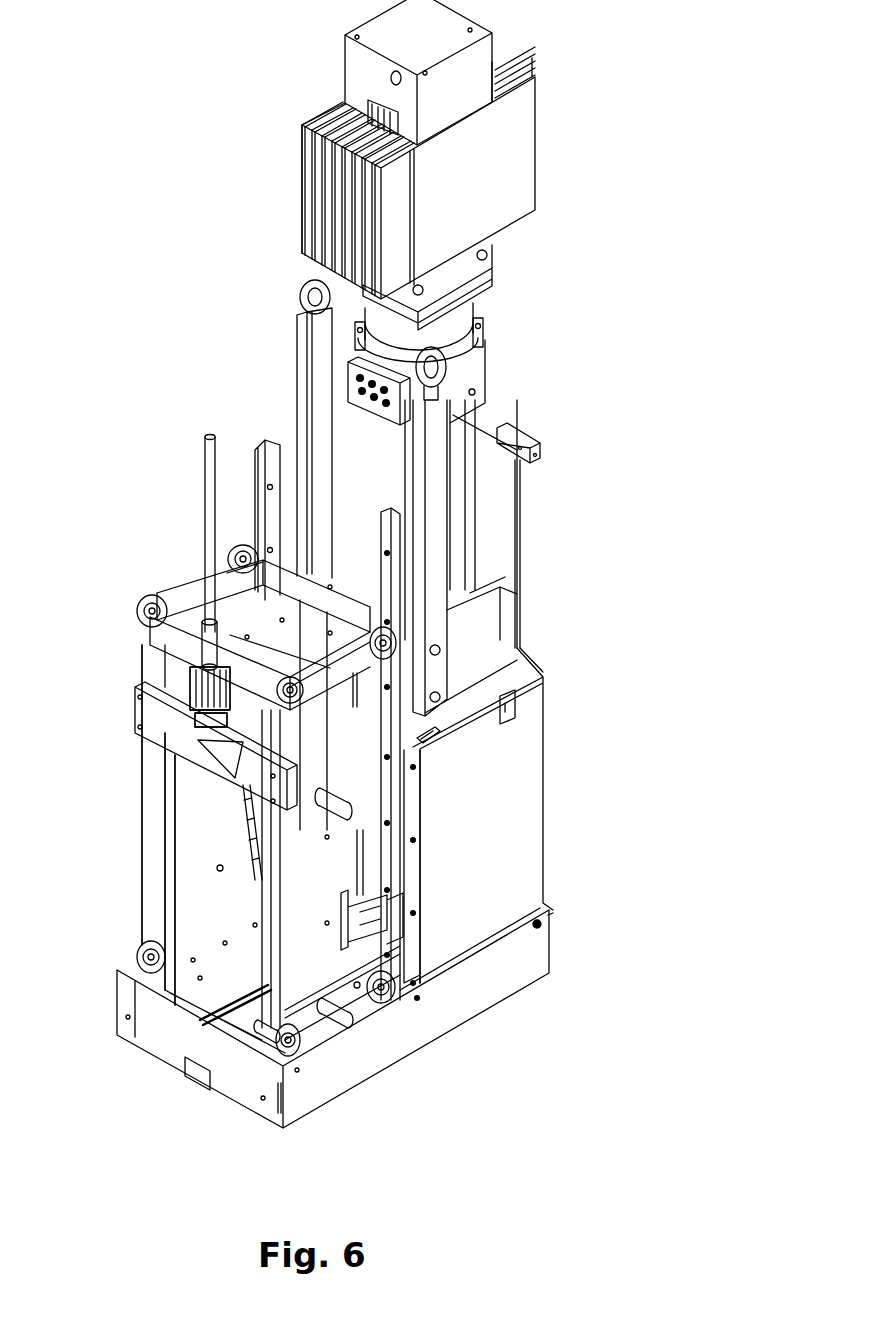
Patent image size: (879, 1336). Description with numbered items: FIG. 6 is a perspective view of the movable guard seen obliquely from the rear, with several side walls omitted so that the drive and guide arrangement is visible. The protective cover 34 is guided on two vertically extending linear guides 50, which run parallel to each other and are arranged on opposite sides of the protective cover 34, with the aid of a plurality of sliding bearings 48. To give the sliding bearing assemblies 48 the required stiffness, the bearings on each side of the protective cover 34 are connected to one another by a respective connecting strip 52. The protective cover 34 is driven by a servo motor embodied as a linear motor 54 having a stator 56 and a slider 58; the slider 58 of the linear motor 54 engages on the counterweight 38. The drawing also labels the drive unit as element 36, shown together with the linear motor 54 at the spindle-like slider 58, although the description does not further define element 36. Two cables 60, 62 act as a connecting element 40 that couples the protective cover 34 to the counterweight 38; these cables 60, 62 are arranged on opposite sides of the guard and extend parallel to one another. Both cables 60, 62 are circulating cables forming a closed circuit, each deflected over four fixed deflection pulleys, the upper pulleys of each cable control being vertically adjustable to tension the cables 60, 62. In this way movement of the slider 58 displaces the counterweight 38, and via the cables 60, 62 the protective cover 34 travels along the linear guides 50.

The protective cover 34 is at (528, 803).
The spindle nut 36 is at (215, 660).
The counterweight 38 is at (153, 727).
The connecting element 40 is at (140, 907).
The sliding bearing 48 is at (432, 741).
The linear guide 50 is at (268, 442).
The connecting strip 52 is at (412, 868).
The linear motor 54 is at (210, 697).
The stator 56 is at (205, 650).
The slider 58 is at (208, 470).
The cable 60 is at (158, 825).
The cable 62 is at (278, 947).